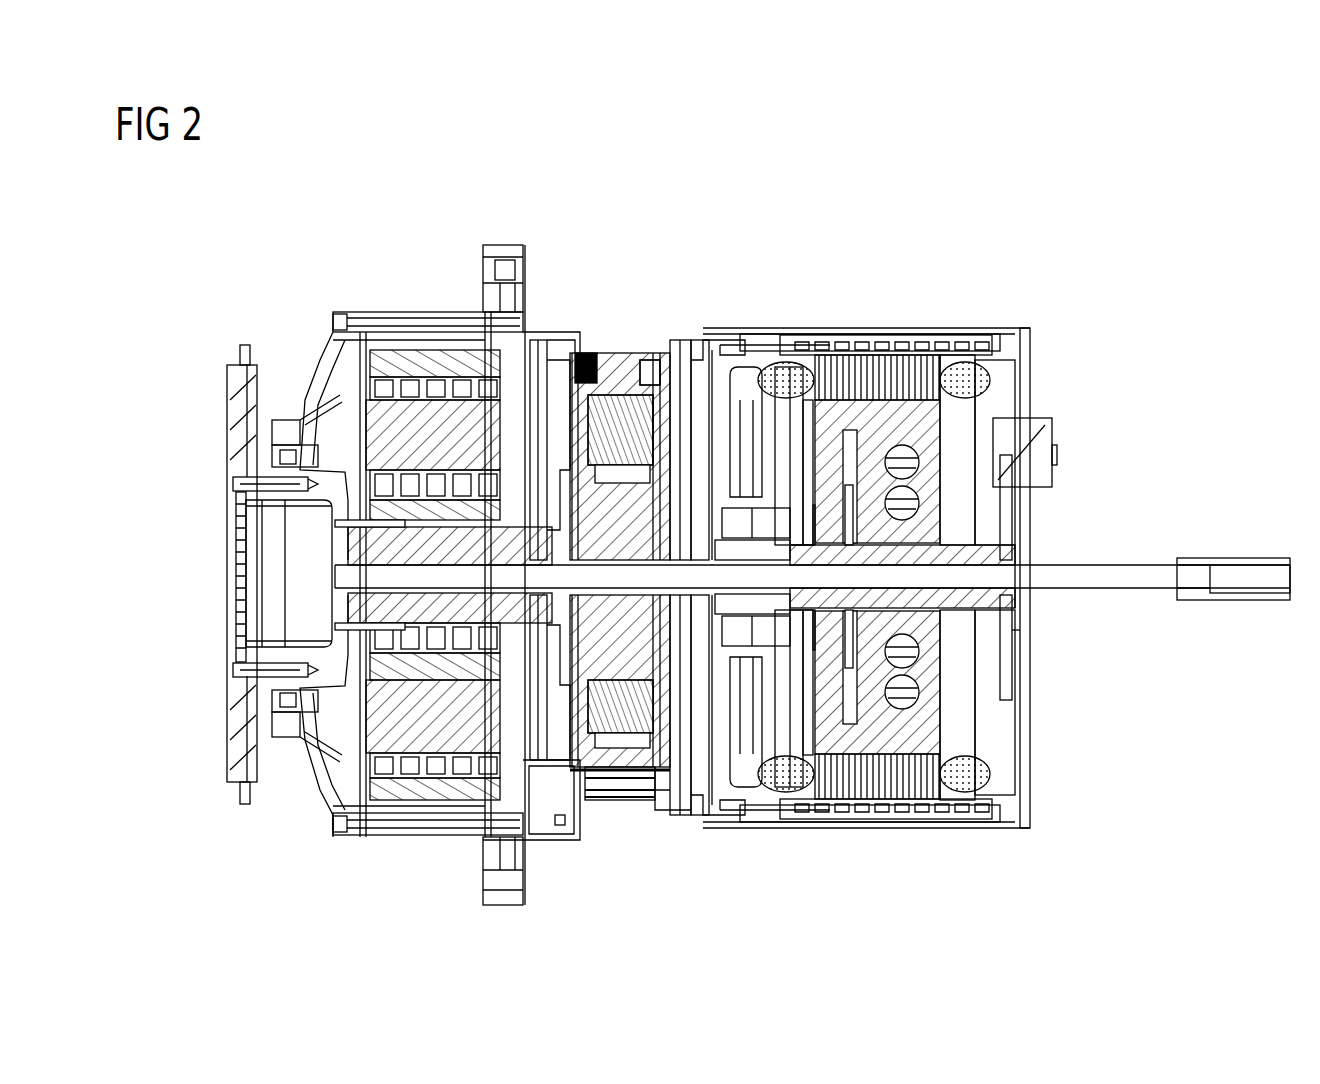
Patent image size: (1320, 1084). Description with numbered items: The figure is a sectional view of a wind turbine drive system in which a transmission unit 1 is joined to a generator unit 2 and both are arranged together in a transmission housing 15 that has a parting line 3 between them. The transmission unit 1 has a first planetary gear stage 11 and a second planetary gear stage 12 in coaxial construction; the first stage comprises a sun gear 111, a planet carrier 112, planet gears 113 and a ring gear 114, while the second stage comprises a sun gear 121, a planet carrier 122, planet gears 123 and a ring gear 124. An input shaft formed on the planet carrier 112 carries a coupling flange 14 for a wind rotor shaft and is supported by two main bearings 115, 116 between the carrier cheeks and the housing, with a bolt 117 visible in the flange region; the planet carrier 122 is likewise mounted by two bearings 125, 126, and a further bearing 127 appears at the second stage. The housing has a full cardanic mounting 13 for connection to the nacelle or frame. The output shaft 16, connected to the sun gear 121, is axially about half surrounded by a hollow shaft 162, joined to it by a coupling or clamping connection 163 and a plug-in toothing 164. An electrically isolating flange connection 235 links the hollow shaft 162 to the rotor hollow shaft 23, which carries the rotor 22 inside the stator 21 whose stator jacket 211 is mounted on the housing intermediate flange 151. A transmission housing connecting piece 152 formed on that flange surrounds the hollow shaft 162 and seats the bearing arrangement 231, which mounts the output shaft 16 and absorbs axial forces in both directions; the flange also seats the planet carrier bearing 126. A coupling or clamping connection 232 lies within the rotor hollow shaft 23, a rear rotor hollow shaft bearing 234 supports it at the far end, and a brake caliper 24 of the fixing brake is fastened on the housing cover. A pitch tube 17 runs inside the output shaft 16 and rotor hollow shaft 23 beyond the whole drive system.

The transmission unit 1 is at (537, 177).
The generator unit 2 is at (1112, 250).
The parting line 3 is at (712, 322).
The first planetary gear stage 11 is at (440, 208).
The second planetary gear stage 12 is at (642, 205).
The full cardanic mounting 13 is at (512, 848).
The coupling flange 14 is at (235, 385).
The transmission housing 15 is at (322, 802).
The output shaft 16 is at (742, 640).
The pitch tube 17 is at (1245, 556).
The stator 21 is at (905, 337).
The rotor 22 is at (930, 415).
The rotor hollow shaft 23 is at (1015, 615).
The brake caliper 24 is at (1045, 445).
The sun gear 111 is at (352, 605).
The planet carrier 112 is at (333, 333).
The planet gears 113 is at (410, 790).
The ring gear 114 is at (457, 335).
The bearing 115 is at (300, 430).
The bearing 116 is at (542, 405).
The bolt 117 is at (405, 350).
The sun gear 121 is at (610, 392).
The planet carrier 122 is at (660, 350).
The planet gears 123 is at (570, 370).
The ring gear 124 is at (630, 762).
The bearing 125 is at (585, 732).
The planet carrier bearing 126 is at (705, 682).
The bearing 127 is at (640, 400).
The housing intermediate flange 151 is at (690, 350).
The transmission housing connecting piece 152 is at (780, 400).
The hollow shaft 162 is at (805, 490).
The coupling or clamping connection 163 is at (825, 608).
The plug-in toothing 164 is at (828, 610).
The stator jacket 211 is at (762, 815).
The bearing arrangement 231 is at (740, 500).
The coupling or clamping connection 232 is at (1033, 505).
The rear rotor hollow shaft bearing 234 is at (1020, 645).
The electrically isolating flange connection 235 is at (848, 482).